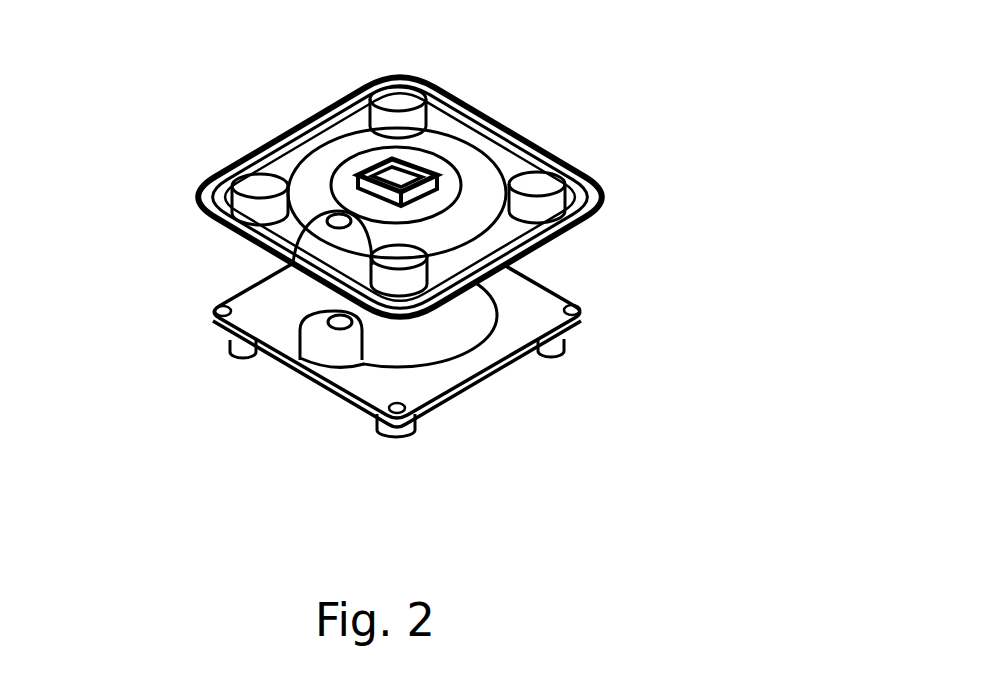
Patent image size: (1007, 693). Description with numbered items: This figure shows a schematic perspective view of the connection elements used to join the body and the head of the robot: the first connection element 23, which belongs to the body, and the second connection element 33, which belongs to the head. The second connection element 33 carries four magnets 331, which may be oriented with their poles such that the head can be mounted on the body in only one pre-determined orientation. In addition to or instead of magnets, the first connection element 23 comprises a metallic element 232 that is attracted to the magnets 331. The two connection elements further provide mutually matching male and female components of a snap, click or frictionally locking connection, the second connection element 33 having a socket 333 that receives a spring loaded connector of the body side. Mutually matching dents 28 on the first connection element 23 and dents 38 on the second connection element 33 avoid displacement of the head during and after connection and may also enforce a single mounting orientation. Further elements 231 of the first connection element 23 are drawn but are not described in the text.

The first connection element 23 is at (328, 400).
The support feet 231 is at (232, 350).
The metallic element 232 is at (510, 367).
The dents 28 is at (335, 350).
The dents 38 is at (307, 237).
The second connection element 33 is at (233, 255).
The magnets 331 is at (372, 101).
The socket 333 is at (394, 160).